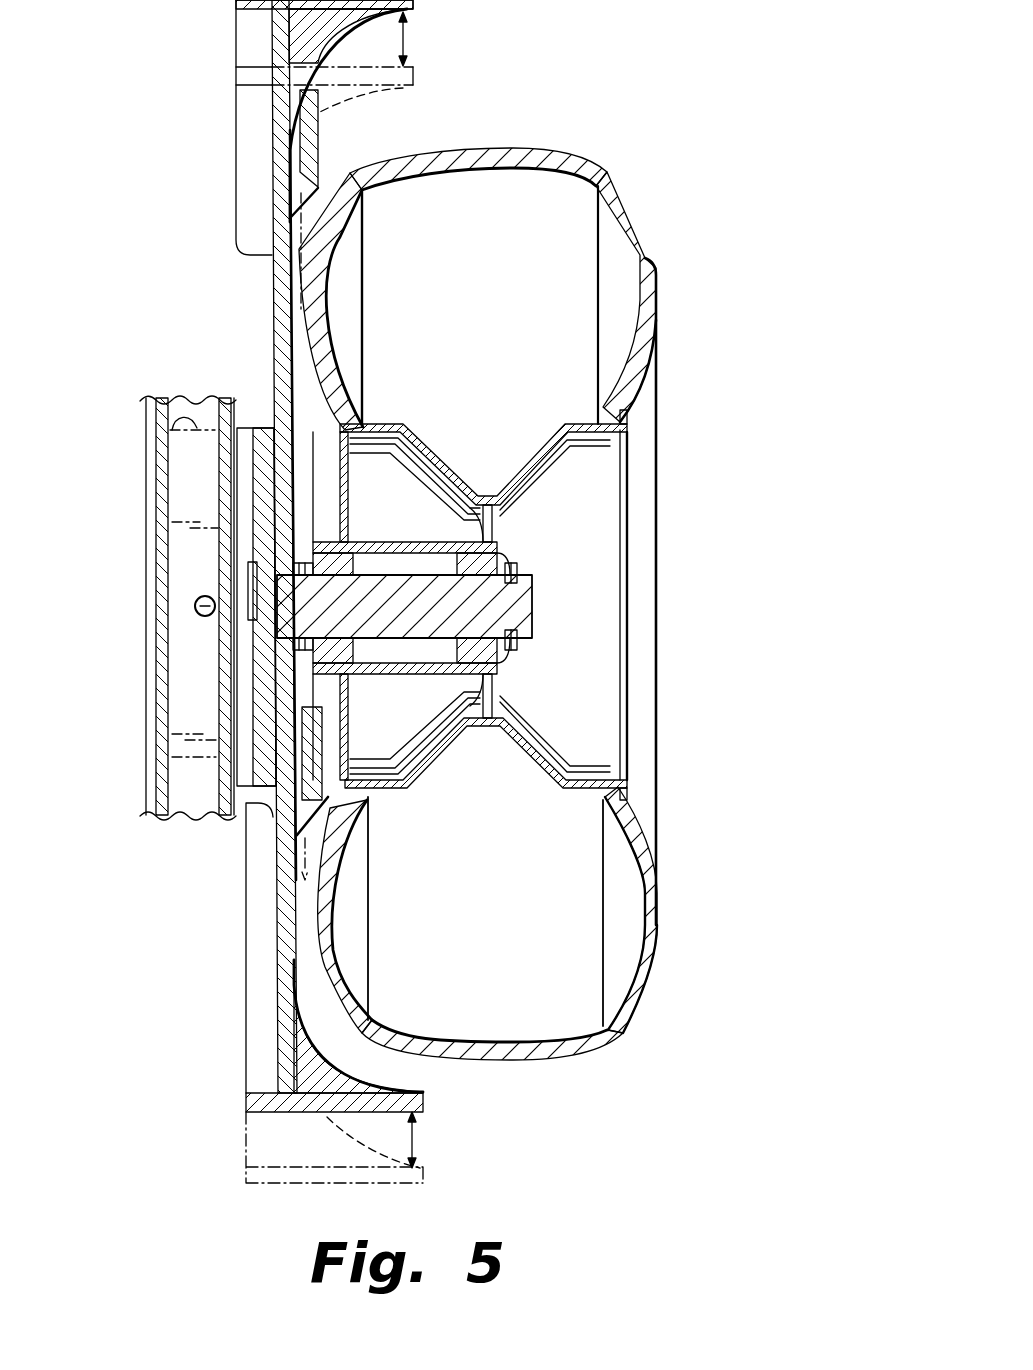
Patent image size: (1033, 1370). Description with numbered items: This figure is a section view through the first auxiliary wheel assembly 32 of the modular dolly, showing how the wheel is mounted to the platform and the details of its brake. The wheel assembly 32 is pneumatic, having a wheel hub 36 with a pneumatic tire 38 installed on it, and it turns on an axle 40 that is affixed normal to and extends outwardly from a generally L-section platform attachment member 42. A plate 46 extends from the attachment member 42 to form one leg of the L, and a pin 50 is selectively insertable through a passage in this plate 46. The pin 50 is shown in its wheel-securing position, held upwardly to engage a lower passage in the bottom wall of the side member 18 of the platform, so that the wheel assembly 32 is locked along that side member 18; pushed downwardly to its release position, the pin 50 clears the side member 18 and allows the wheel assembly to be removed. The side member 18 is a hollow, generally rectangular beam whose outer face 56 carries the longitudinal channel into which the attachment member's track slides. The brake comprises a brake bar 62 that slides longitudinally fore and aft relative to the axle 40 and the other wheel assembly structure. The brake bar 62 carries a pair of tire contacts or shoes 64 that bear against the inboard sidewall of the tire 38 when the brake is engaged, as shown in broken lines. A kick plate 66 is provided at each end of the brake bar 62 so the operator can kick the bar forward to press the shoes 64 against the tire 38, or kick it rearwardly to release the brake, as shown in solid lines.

The side member 18 is at (148, 470).
The first auxiliary wheel assembly 32 is at (690, 1089).
The wheel hub 36 is at (630, 530).
The pneumatic tire 38 is at (657, 893).
The axle 40 is at (533, 592).
The platform attachment member 42 is at (260, 425).
The plate 46 is at (138, 445).
The pin 50 is at (195, 606).
The outer face 56 is at (292, 487).
The brake bar 62 is at (245, 950).
The tire contacts or shoes 64 is at (304, 200).
The kick plate 66 is at (413, 84).